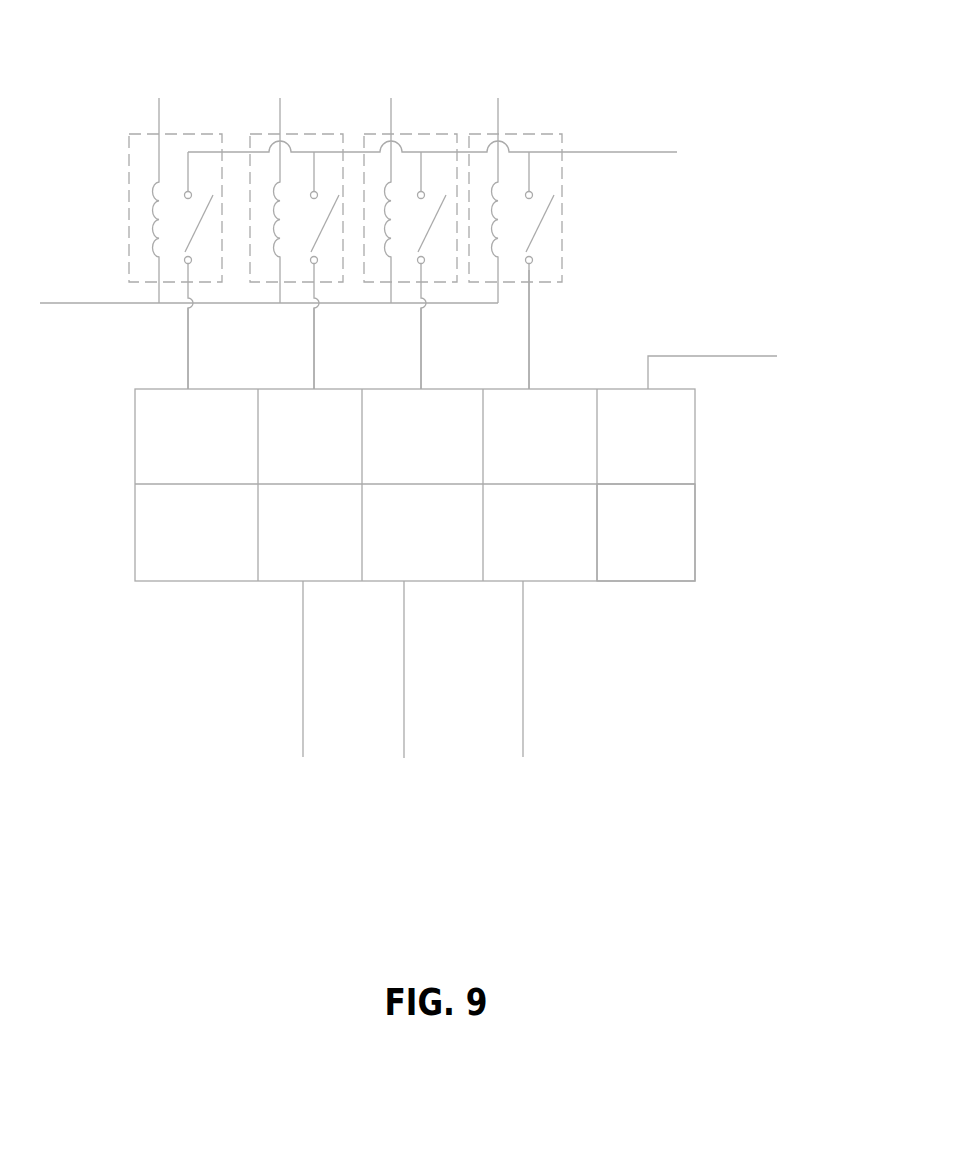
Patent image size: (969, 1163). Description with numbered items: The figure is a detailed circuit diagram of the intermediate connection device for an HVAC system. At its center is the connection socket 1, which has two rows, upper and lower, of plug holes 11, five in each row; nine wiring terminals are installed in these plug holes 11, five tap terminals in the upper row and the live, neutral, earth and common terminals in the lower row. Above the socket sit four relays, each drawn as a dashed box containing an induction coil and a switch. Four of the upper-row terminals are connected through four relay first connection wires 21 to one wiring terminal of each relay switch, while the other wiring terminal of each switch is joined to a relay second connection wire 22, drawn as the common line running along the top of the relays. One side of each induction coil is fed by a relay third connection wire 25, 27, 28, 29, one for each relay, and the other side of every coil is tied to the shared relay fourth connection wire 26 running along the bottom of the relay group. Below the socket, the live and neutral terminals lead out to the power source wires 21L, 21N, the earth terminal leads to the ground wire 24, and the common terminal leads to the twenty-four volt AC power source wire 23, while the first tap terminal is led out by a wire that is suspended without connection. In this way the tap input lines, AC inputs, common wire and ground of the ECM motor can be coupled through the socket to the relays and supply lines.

The connection socket 1 is at (697, 537).
The plug holes 11 is at (675, 561).
The relay first connection wires 21 is at (422, 350).
The power source wire 21L is at (303, 721).
The power source wire 21N is at (403, 730).
The relay second connection wires 22 is at (529, 171).
The 24 V AC power source wire 23 is at (635, 742).
The ground wire 24 is at (523, 733).
The relay third connection wire 25 is at (158, 110).
The relay fourth connection wire 26 is at (158, 290).
The relay third connection wire 27 is at (278, 110).
The relay third connection wire 28 is at (390, 100).
The relay third connection wire 29 is at (497, 98).